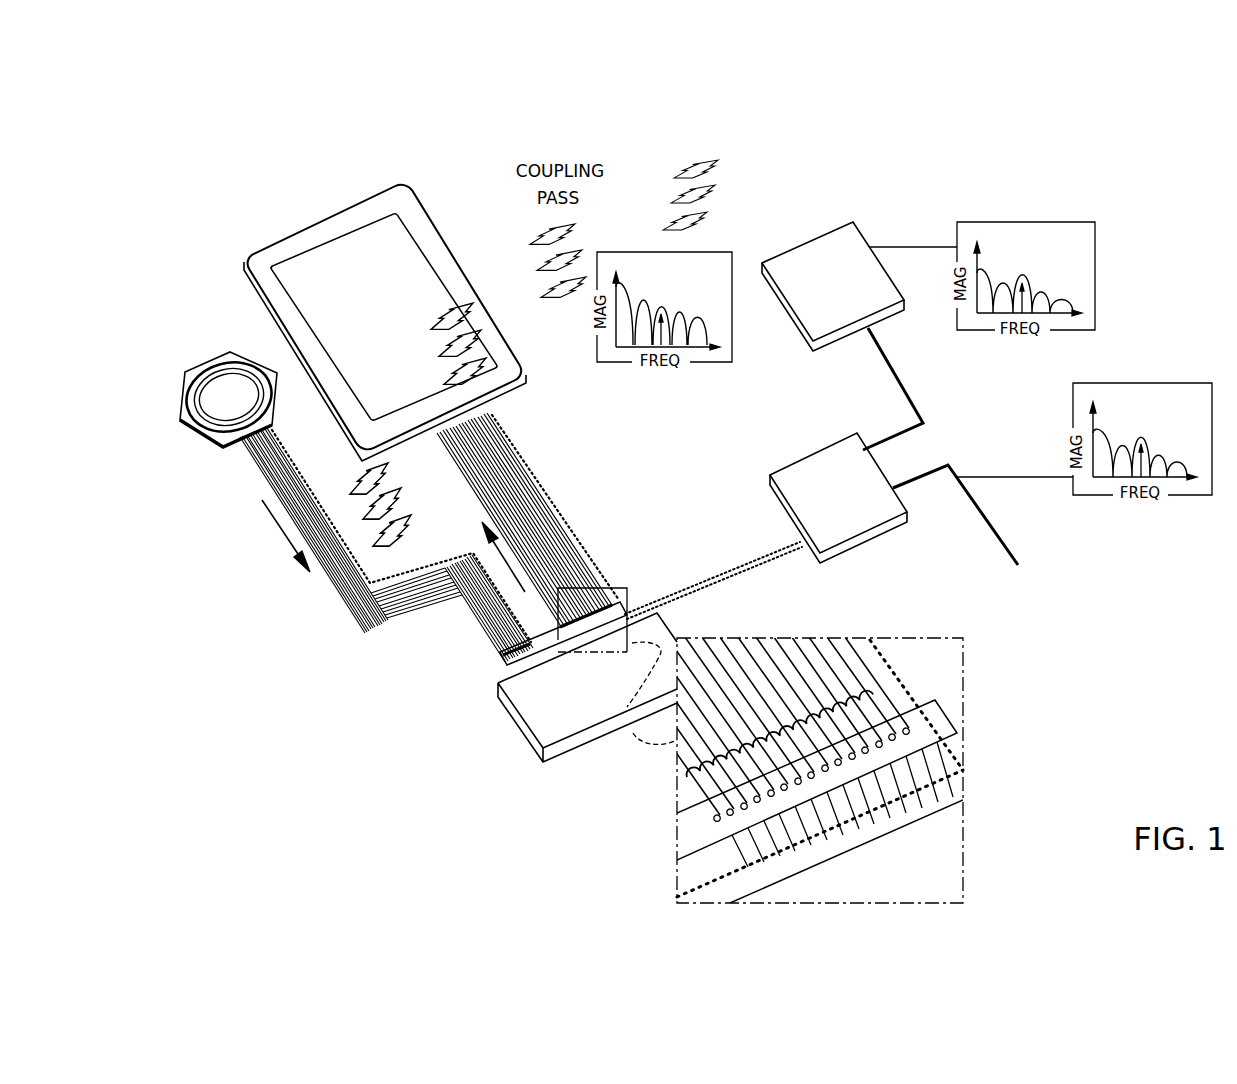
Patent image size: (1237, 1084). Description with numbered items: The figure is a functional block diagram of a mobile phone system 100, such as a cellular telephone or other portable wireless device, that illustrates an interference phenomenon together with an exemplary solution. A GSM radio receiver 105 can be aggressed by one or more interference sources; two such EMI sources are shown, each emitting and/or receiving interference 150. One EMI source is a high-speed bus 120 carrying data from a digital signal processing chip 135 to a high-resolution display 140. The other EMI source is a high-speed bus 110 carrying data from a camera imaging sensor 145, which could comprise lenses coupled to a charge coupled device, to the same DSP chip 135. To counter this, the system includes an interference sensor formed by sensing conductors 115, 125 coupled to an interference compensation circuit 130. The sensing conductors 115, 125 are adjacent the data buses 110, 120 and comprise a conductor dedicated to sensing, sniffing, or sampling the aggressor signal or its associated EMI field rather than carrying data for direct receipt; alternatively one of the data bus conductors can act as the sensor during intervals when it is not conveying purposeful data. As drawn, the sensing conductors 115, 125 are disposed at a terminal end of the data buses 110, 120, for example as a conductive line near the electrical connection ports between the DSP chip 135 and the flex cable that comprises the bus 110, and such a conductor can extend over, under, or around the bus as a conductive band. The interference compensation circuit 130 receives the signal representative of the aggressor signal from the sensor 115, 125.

The mobile phone system 100 is at (275, 145).
The GSM radio receiver 105 is at (818, 235).
The high-speed bus 110 is at (352, 595).
The sensing conductor 115 is at (418, 578).
The high-speed bus 120 is at (498, 438).
The sensing conductor 125 is at (540, 480).
The interference compensation circuit 130 is at (795, 458).
The DSP chip 135 is at (523, 696).
The high-resolution display 140 is at (325, 218).
The camera imaging sensor 145 is at (183, 372).
The interference 150 is at (450, 298).